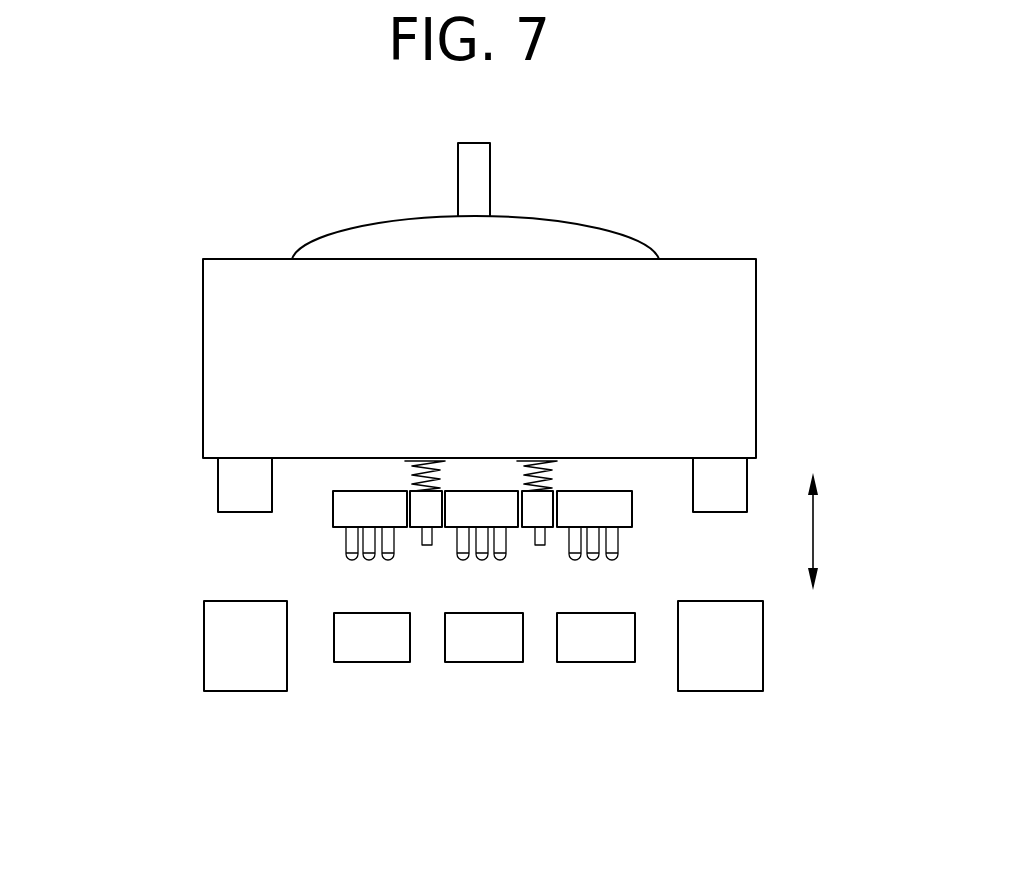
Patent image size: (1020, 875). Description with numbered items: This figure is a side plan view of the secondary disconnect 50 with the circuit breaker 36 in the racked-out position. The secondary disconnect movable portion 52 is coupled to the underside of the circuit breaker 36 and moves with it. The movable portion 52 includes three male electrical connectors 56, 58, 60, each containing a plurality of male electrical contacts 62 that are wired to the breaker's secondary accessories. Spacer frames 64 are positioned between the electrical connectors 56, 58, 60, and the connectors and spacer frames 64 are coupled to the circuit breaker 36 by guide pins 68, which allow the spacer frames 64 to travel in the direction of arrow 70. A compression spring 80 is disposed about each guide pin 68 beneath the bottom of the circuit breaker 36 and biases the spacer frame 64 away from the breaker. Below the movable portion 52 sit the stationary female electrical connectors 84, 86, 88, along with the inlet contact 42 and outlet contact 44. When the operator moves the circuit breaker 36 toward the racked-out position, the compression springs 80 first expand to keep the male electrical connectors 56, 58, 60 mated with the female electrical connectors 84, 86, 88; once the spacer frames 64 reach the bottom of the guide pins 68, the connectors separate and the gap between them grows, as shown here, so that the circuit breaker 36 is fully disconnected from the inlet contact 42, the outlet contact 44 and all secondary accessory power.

The circuit breaker 36 is at (756, 352).
The inlet contact 42 is at (204, 672).
The outlet contact 44 is at (763, 644).
The secondary disconnect 50 is at (160, 145).
The secondary disconnect movable portion 52 is at (165, 478).
The male electrical connector 56 is at (367, 490).
The male electrical connector 58 is at (478, 463).
The male electrical connector 60 is at (595, 490).
The male electrical contacts 62 is at (617, 540).
The spacer frames 64 is at (410, 489).
The guide pins 68 is at (424, 546).
The arrow 70 is at (815, 530).
The compression spring 80 is at (425, 462).
The female electrical connector 84 is at (373, 662).
The female electrical connector 86 is at (484, 662).
The female electrical connector 88 is at (607, 662).